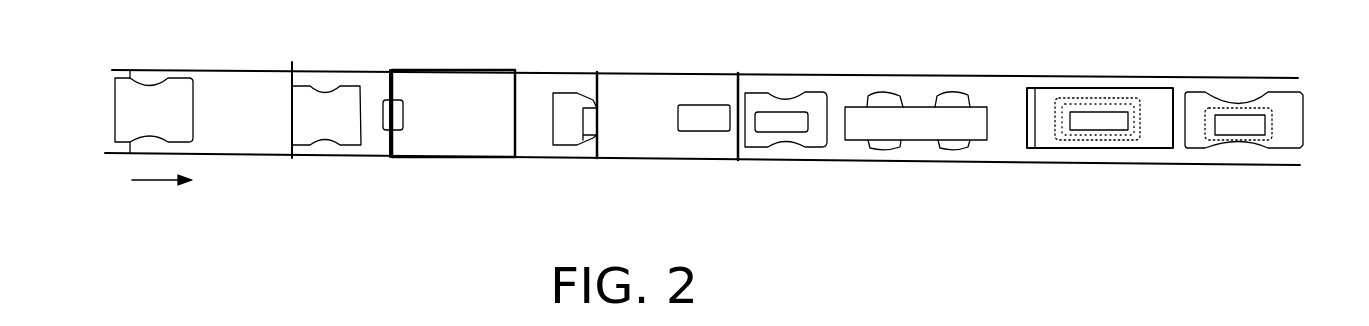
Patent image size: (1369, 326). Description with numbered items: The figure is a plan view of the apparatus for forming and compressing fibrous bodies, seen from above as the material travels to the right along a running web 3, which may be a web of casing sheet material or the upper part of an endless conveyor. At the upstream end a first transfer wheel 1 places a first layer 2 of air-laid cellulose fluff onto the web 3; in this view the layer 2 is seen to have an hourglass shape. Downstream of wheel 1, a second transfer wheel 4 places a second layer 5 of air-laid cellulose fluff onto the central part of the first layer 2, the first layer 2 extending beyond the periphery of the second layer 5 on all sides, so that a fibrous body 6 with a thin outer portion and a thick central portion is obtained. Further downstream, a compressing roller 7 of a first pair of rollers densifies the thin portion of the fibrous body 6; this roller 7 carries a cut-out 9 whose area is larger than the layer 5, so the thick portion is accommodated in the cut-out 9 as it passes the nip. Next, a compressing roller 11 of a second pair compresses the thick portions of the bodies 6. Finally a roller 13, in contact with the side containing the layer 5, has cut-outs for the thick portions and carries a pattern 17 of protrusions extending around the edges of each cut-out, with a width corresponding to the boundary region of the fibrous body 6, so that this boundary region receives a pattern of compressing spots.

The first transfer wheel 1 is at (232, 95).
The first layer 2 is at (160, 100).
The running web 3 is at (370, 80).
The second transfer wheel 4 is at (468, 97).
The second layer 5 is at (405, 112).
The fibrous body 6 is at (1275, 110).
The compressing roller 7 is at (642, 95).
The cut-out 9 is at (700, 115).
The compressing roller 11 is at (915, 117).
The roller 13 is at (1153, 103).
The pattern of protrusions 17 is at (1055, 120).